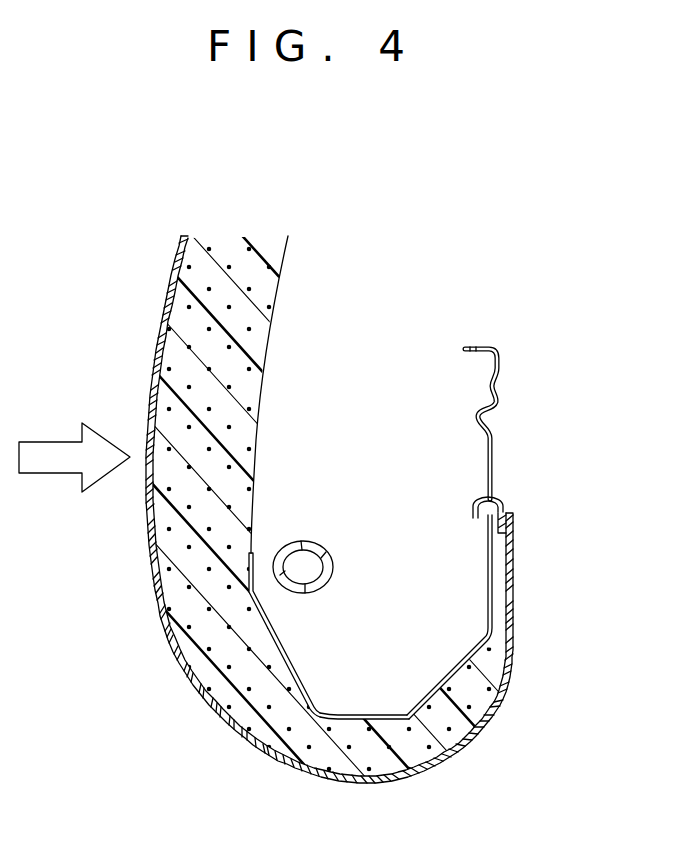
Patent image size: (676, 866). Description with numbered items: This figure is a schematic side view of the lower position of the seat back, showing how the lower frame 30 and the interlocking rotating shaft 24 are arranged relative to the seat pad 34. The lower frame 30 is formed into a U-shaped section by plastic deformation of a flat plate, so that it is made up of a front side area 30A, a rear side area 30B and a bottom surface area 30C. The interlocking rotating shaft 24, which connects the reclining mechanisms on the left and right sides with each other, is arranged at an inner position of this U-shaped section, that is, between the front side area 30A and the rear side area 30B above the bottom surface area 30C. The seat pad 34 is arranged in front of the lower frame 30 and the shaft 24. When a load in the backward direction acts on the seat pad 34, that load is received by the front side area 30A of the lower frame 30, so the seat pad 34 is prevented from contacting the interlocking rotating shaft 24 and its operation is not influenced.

The interlocking rotating shaft 24 is at (323, 553).
The lower frame 30 is at (335, 680).
The front side area 30A is at (250, 572).
The rear side area 30B is at (493, 626).
The bottom surface area 30C is at (372, 720).
The seat pad 34 is at (182, 547).